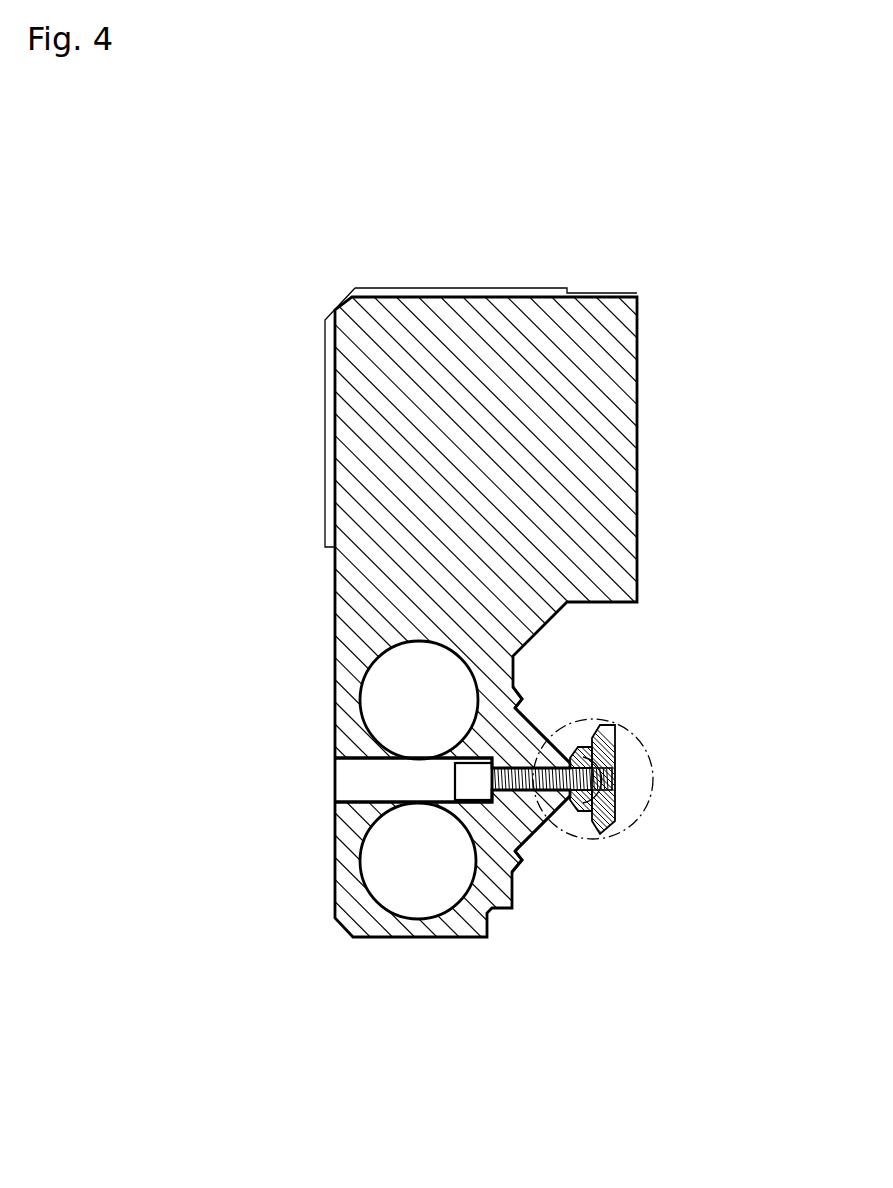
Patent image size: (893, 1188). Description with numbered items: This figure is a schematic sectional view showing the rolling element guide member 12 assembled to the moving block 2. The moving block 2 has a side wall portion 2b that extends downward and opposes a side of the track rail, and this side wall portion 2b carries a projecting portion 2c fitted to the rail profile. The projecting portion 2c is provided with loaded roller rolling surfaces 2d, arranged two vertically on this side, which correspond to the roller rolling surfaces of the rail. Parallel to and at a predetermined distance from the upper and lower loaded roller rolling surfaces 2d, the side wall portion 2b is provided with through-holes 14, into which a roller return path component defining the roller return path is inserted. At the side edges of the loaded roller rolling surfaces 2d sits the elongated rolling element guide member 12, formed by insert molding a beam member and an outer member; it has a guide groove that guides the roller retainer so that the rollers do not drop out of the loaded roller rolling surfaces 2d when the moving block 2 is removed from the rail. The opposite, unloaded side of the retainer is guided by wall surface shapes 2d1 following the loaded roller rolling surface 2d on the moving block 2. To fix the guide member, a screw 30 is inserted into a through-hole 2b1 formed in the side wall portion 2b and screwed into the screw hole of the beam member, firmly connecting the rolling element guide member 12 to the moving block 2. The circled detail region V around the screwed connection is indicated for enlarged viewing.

The moving block 2 is at (410, 286).
The side wall portion 2b is at (325, 476).
The through-hole 2b1 is at (380, 802).
The through-hole 14 is at (372, 678).
The screw 30 is at (466, 758).
The wall surface shape 2d1 is at (523, 703).
The loaded roller rolling surface 2d is at (534, 733).
The projecting portion 2c is at (565, 820).
The rolling element guide member 12 is at (622, 732).
The section view circle V is at (648, 826).